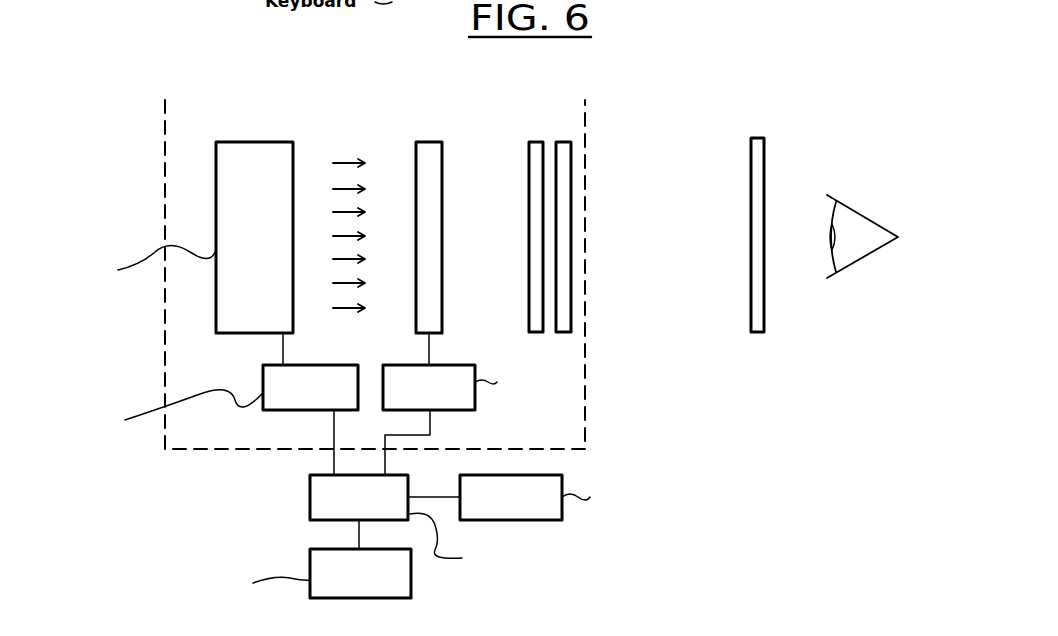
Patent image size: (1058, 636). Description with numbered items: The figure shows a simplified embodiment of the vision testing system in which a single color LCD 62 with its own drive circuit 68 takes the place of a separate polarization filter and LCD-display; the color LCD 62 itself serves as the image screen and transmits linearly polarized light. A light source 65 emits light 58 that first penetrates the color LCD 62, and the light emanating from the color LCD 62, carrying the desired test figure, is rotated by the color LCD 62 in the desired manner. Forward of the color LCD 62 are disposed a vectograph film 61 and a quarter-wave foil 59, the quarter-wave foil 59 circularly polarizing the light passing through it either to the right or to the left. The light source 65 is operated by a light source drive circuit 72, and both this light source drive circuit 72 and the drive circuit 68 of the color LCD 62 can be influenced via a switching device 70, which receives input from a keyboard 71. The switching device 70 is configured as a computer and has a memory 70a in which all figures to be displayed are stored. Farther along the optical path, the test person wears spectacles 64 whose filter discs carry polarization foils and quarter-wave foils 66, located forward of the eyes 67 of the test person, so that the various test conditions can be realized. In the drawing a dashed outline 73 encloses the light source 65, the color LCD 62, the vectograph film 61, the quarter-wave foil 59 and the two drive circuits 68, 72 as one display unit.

The light 58 is at (342, 162).
The λ/4-foil 59 is at (562, 155).
The vectograph film 61 is at (536, 150).
The color LCD 62 is at (429, 150).
The spectacles 64 is at (744, 120).
The light source 65 is at (250, 160).
The λ/4-foil 66 is at (757, 138).
The eyes 67 is at (855, 227).
The drive circuit 68 is at (446, 398).
The switching device 70 is at (373, 508).
The memory 70a is at (528, 508).
The keyboard 71 is at (373, 585).
The light source drive circuit 72 is at (326, 398).
The display unit 73 is at (165, 213).